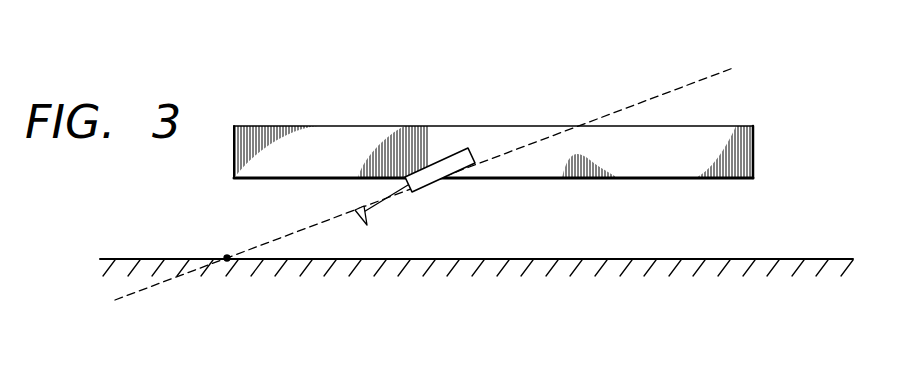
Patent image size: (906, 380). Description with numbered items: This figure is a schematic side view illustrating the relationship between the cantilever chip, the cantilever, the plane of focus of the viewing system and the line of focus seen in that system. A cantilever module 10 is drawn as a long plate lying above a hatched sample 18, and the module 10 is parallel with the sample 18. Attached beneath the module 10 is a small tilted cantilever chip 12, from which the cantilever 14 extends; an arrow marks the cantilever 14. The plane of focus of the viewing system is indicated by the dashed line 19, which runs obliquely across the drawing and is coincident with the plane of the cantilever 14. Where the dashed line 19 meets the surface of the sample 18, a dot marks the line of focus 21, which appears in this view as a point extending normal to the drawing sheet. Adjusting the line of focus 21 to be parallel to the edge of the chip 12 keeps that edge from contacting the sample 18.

The cantilever module 10 is at (743, 163).
The cantilever chip 12 is at (433, 192).
The cantilever 14 is at (357, 208).
The sample 18 is at (668, 259).
The dashed line 19 is at (648, 100).
The line of focus 21 is at (227, 260).